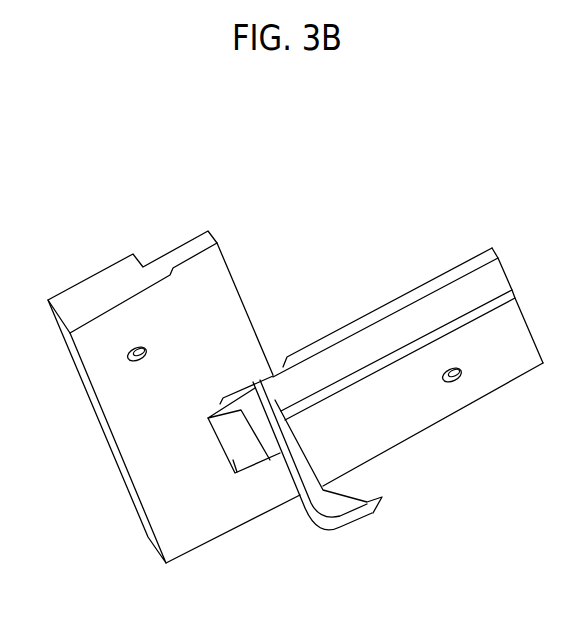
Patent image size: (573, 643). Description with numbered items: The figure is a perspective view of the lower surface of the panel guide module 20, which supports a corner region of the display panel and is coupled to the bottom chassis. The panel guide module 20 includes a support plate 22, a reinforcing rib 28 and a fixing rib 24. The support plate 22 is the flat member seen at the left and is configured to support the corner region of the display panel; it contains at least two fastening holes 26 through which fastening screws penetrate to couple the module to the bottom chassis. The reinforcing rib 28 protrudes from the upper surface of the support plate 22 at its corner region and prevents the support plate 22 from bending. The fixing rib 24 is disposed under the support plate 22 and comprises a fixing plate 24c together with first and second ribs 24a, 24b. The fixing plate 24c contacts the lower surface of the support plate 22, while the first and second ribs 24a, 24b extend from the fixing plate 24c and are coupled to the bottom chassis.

The panel guide module 20 is at (88, 163).
The support plate 22 is at (172, 250).
The fixing rib 24 is at (407, 570).
The first rib 24a is at (368, 503).
The second rib 24b is at (337, 528).
The fixing plate 24c is at (237, 460).
The fastening holes 26 is at (130, 362).
The reinforcing rib 28 is at (89, 278).